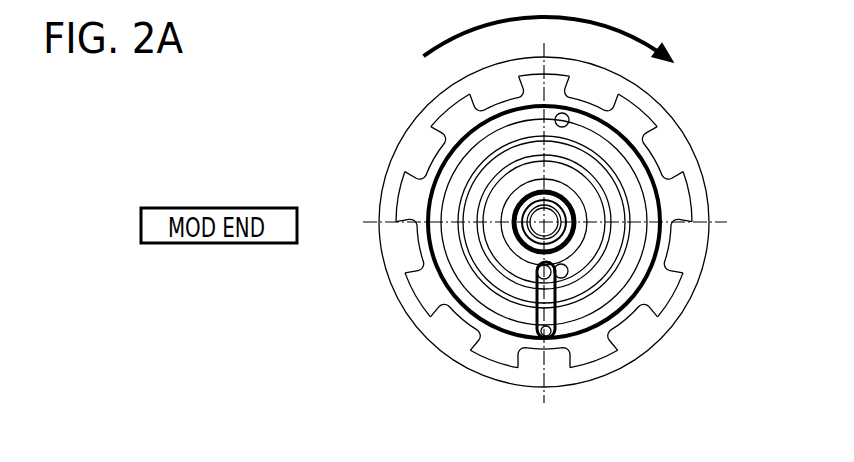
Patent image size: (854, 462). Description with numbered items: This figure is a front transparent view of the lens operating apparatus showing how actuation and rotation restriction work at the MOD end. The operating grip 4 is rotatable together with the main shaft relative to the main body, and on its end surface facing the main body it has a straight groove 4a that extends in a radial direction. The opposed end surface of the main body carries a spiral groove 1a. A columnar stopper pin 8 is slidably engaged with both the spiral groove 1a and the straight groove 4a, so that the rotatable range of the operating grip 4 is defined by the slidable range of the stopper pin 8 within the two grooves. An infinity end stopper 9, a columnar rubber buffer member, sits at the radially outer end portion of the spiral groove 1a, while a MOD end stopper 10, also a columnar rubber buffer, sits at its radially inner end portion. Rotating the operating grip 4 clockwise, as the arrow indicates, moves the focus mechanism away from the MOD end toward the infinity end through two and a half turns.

The operating grip 4 is at (435, 297).
The straight groove 4a is at (539, 288).
The spiral groove 1a is at (517, 265).
The stopper pin 8 is at (537, 273).
The infinity end stopper 9 is at (569, 120).
The MOD end stopper 10 is at (568, 271).